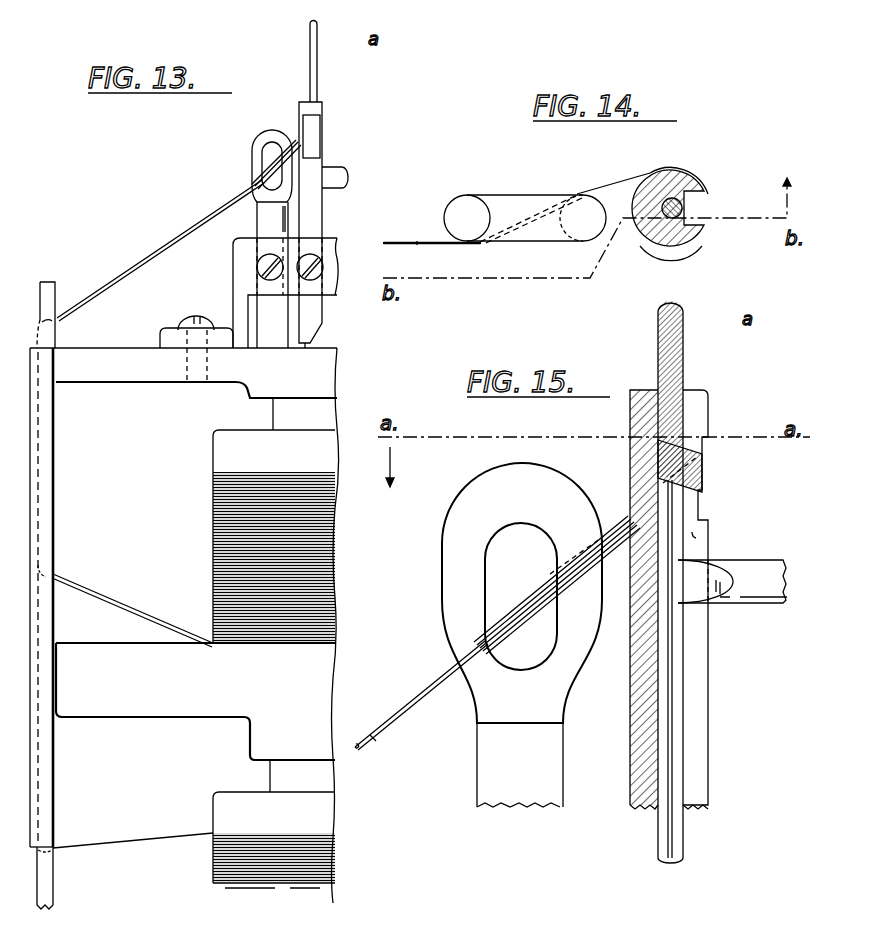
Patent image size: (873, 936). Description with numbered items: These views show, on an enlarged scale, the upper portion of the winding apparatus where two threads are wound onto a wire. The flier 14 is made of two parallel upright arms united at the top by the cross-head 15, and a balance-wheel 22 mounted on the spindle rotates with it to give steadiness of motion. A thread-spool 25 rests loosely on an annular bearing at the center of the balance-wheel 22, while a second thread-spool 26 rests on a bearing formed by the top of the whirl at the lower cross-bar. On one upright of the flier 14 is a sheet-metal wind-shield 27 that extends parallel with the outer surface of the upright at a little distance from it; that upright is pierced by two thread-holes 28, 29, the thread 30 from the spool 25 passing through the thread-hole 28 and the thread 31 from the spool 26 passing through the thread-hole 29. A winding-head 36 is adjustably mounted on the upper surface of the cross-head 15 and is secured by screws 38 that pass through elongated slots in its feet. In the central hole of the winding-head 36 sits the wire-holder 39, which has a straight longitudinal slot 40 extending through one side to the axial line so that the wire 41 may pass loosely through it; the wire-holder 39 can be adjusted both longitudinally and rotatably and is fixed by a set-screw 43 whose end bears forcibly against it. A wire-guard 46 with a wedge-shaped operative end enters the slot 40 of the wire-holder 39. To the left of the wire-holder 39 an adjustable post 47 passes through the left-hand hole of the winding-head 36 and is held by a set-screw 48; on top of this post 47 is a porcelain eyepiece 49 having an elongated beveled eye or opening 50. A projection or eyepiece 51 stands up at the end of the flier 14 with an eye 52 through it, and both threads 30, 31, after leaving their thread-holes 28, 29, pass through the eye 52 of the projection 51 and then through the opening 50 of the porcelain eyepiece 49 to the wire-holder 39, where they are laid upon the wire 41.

In FIG. 13, the flier 14 is at (59, 885).
In FIG. 13, the cross-head 15 is at (118, 342).
In FIG. 13, the balance-wheel 22 is at (153, 703).
In FIG. 13, the thread-spool 25 is at (218, 458).
In FIG. 13, the thread-spool 26 is at (252, 840).
In FIG. 13, the wind-shield 27 is at (30, 506).
In FIG. 13, the thread-hole 28 is at (60, 573).
In FIG. 13, the thread-hole 29 is at (57, 858).
In FIG. 13, the thread 30 is at (209, 218).
In FIG. 14, the thread 30 is at (385, 240).
In FIG. 15, the thread 30 is at (393, 712).
In FIG. 13, the thread 31 is at (184, 234).
In FIG. 14, the thread 31 is at (436, 242).
In FIG. 15, the thread 31 is at (393, 731).
In FIG. 13, the winding-head 36 is at (233, 304).
In FIG. 13, the screws 38 is at (177, 322).
In FIG. 13, the wire-holder 39 is at (328, 220).
In FIG. 14, the wire-holder 39 is at (712, 188).
In FIG. 15, the wire-holder 39 is at (686, 599).
In FIG. 14, the longitudinal slot 40 is at (712, 212).
In FIG. 15, the longitudinal slot 40 is at (696, 536).
In FIG. 13, the wire 41 is at (313, 48).
In FIG. 15, the wire 41 is at (684, 333).
In FIG. 13, the set-screw 43 is at (338, 268).
In FIG. 13, the wire-guard 46 is at (349, 180).
In FIG. 15, the wire-guard 46 is at (762, 572).
In FIG. 13, the adjustable post 47 is at (257, 227).
In FIG. 15, the adjustable post 47 is at (520, 782).
In FIG. 13, the set-screw 48 is at (256, 269).
In FIG. 13, the porcelain eyepiece 49 is at (267, 134).
In FIG. 14, the porcelain eyepiece 49 is at (582, 232).
In FIG. 15, the porcelain eyepiece 49 is at (447, 585).
In FIG. 13, the eye or opening 50 is at (262, 158).
In FIG. 14, the eye or opening 50 is at (535, 204).
In FIG. 15, the eye or opening 50 is at (510, 550).
In FIG. 13, the projection or eyepiece 51 is at (49, 301).
In FIG. 13, the eye or opening 52 is at (40, 322).